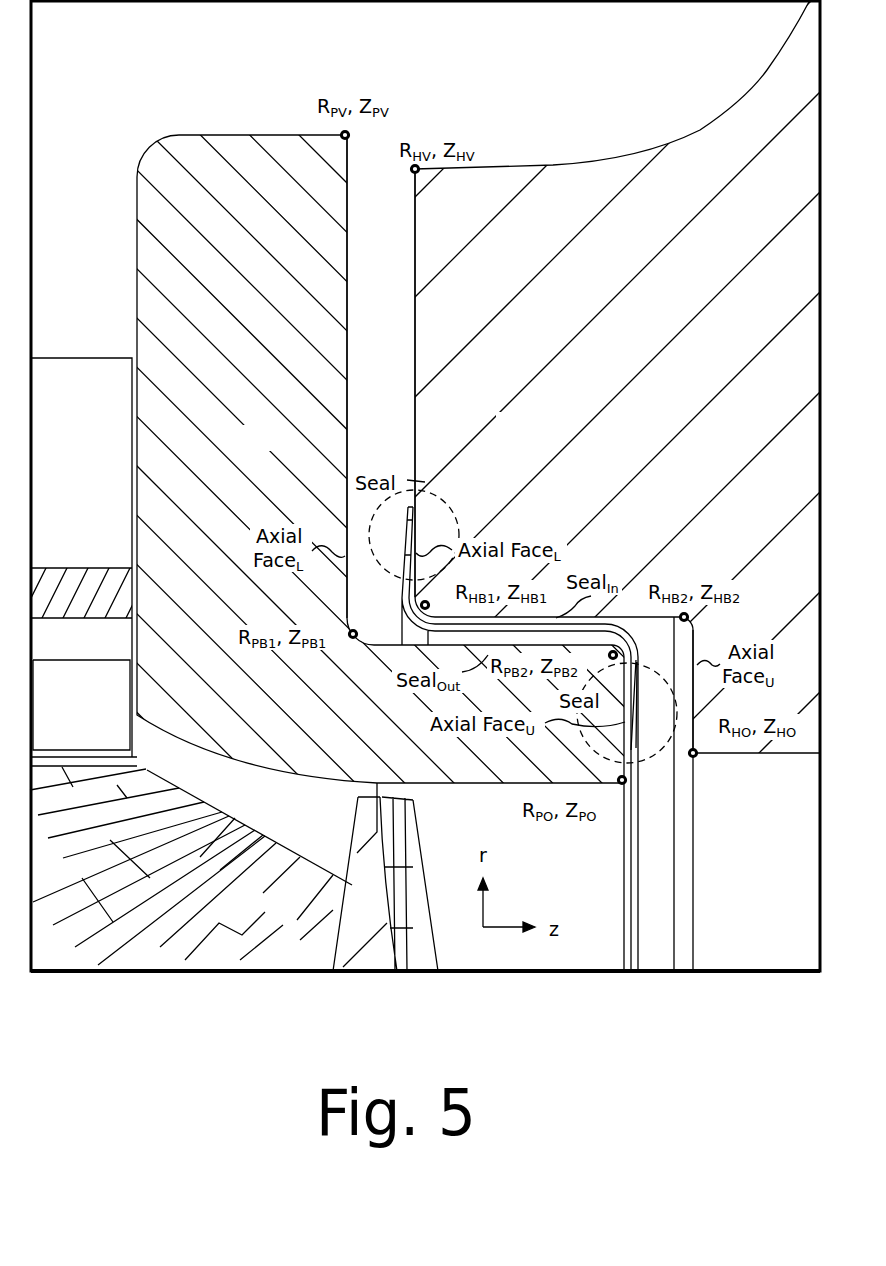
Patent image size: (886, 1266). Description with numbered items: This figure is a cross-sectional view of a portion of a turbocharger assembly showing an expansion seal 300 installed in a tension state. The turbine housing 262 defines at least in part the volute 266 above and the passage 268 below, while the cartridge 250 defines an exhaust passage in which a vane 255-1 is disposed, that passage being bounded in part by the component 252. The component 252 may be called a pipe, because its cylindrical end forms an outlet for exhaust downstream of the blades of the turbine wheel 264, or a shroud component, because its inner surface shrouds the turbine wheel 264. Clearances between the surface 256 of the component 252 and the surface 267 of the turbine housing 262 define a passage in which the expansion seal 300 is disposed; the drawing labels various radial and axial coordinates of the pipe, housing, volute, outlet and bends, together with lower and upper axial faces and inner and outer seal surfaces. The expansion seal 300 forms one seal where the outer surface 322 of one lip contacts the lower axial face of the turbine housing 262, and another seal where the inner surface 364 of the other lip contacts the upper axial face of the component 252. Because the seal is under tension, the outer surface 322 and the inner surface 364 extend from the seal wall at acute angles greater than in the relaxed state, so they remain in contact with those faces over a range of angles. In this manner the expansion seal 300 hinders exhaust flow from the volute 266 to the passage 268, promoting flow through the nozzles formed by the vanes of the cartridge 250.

The cartridge 250 is at (150, 74).
The component 252 is at (268, 448).
The vane 255-1 is at (112, 472).
The surface 256 is at (347, 415).
The turbine housing 262 is at (535, 435).
The turbine wheel 264 is at (258, 910).
The volute 266 is at (558, 76).
The surface 267 is at (415, 365).
The passage 268 is at (781, 820).
The expansion seal 300 is at (627, 828).
The outer surface 322 is at (415, 510).
The inner surface 364 is at (632, 757).